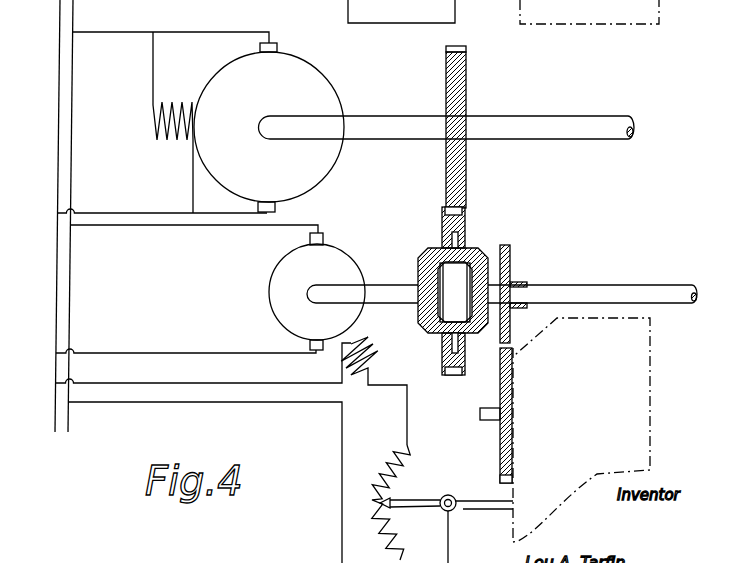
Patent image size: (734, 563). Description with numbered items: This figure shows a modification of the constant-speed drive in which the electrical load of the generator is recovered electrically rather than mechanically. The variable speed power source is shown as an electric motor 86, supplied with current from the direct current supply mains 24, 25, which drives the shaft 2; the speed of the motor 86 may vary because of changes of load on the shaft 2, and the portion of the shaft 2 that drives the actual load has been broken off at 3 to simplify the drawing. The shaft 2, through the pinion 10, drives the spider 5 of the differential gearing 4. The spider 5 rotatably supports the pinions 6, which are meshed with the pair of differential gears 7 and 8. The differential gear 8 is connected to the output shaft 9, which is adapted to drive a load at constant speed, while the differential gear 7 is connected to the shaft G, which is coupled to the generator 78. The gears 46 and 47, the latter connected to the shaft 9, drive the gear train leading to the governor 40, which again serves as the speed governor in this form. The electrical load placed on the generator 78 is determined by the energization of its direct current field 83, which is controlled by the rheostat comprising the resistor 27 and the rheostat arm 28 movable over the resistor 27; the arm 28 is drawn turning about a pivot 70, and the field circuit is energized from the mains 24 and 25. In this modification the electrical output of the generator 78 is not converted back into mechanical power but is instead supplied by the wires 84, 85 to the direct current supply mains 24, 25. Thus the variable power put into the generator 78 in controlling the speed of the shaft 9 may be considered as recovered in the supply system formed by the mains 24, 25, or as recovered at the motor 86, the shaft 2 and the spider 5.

The shaft 2 is at (388, 123).
The broken-off portion of shaft 3 is at (636, 134).
The differential gearing 4 is at (398, 15).
The spider 5 is at (466, 224).
The pinions 6 is at (440, 247).
The differential gear 7 is at (422, 263).
The differential gear 8 is at (490, 257).
The output shaft 9 is at (578, 290).
The pinion 10 is at (466, 172).
The direct current supply main 24 is at (55, 421).
The direct current supply main 25 is at (70, 424).
The resistor 27 is at (386, 538).
The rheostat arm 28 is at (410, 500).
The governor 40 is at (512, 531).
The gear 46 is at (500, 446).
The gear 47 is at (512, 266).
The pivot 70 is at (477, 500).
The generator 78 is at (346, 252).
The direct current field 83 is at (386, 362).
The wire 84 is at (205, 226).
The wire 85 is at (176, 352).
The electric motor 86 is at (313, 73).
The shaft G is at (386, 288).